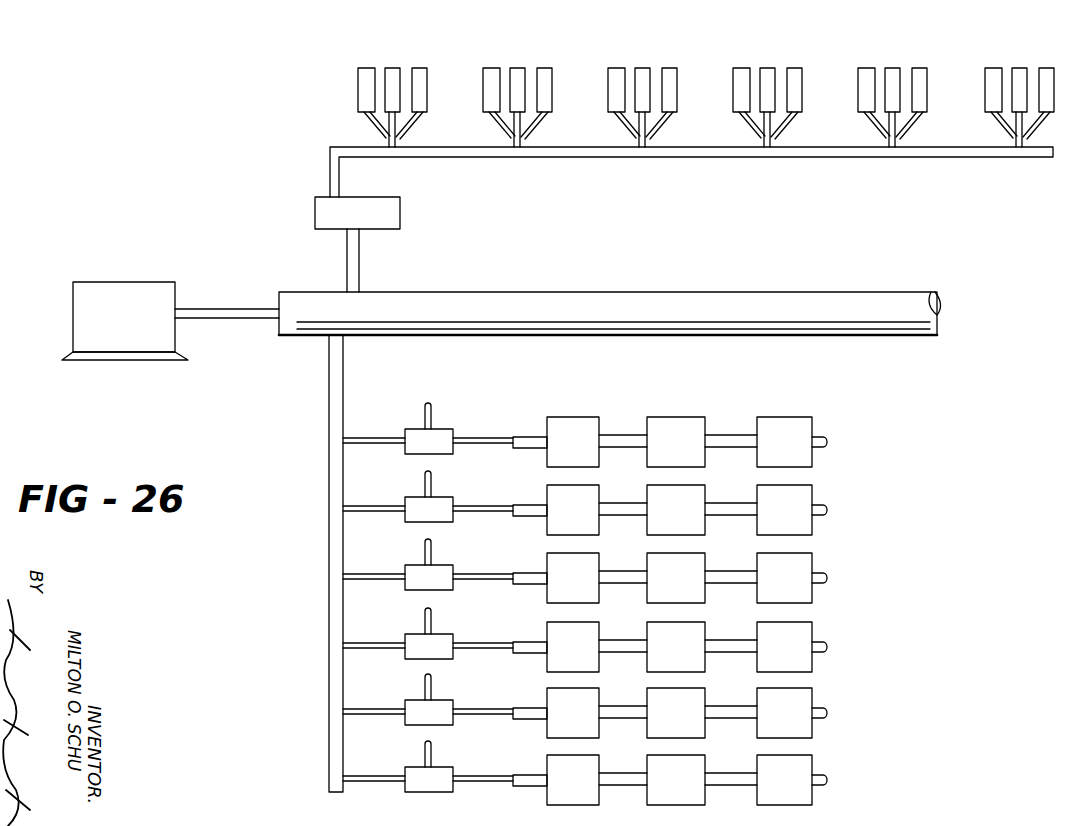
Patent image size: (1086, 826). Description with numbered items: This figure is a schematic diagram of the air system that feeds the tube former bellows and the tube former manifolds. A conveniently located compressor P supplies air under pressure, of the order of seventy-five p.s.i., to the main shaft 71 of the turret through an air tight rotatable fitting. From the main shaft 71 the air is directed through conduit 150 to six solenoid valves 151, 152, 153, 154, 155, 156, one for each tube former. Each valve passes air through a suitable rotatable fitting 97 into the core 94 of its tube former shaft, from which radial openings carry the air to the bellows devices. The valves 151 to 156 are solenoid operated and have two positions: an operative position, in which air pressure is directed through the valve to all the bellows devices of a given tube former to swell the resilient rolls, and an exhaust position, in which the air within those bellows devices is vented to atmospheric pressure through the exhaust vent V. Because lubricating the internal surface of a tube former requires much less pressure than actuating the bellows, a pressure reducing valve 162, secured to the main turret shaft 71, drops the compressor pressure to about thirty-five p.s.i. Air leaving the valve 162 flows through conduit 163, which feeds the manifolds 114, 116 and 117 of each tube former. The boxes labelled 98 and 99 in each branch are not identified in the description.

The tube former manifold 114 is at (365, 84).
The tube former manifold 116 is at (392, 76).
The tube former manifold 117 is at (420, 78).
The conduit 163 is at (353, 152).
The pressure reducing valve 162 is at (314, 207).
The main shaft 71 is at (660, 305).
The compressor P is at (113, 348).
The conduit 150 is at (330, 398).
The exhaust vent V is at (375, 377).
The solenoid valve 151 is at (410, 434).
The solenoid valve 152 is at (410, 502).
The solenoid valve 153 is at (410, 570).
The solenoid valve 154 is at (410, 639).
The solenoid valve 155 is at (410, 705).
The solenoid valve 156 is at (410, 772).
The rotatable fitting 97 is at (513, 436).
The treatment unit 98 is at (573, 611).
The treatment unit 99 is at (676, 611).
The core 94 is at (628, 442).